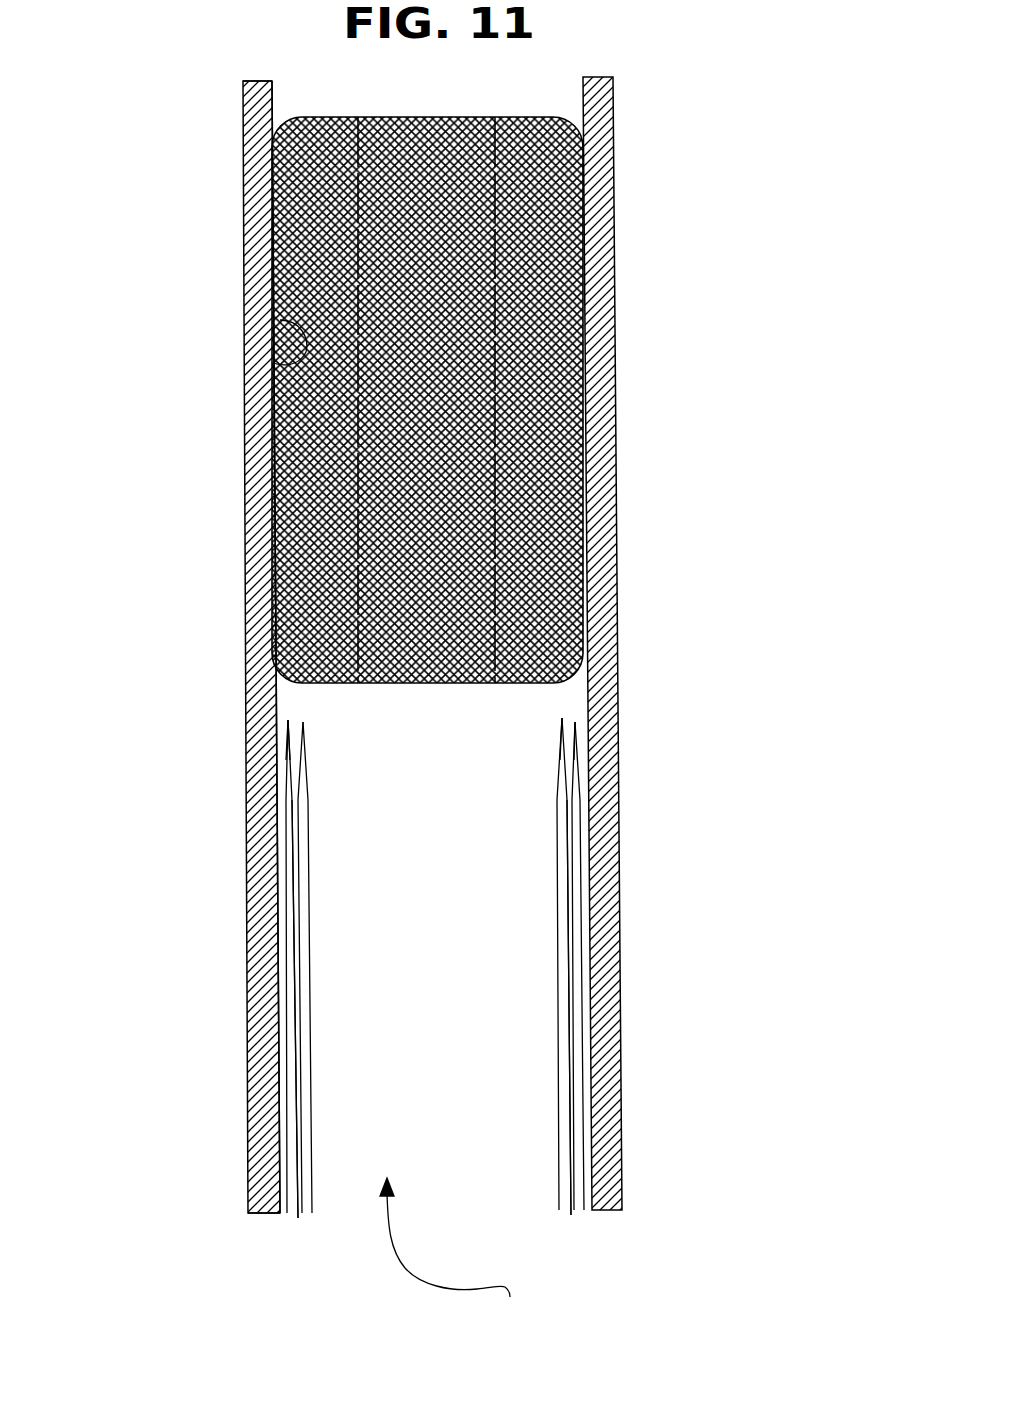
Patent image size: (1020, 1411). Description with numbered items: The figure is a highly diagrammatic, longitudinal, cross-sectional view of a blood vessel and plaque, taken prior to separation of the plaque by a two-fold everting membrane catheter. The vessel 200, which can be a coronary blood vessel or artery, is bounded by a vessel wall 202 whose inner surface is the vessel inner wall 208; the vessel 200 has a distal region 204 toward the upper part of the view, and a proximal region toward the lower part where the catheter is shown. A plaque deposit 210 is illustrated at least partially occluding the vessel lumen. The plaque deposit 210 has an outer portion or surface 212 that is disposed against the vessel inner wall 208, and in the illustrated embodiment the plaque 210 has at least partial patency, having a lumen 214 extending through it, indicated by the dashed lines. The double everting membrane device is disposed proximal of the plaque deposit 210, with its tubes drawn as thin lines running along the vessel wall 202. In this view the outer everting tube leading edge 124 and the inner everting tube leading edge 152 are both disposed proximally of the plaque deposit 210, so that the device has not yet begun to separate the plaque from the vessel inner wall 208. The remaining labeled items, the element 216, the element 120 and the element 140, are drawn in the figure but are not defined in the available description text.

The vessel 200 is at (245, 556).
The vessel wall 202 is at (263, 461).
The distal region 204 is at (243, 143).
The vessel inner wall 208 is at (272, 95).
The plaque deposit 210 is at (305, 253).
The outer portion or surface 212 is at (273, 363).
The lumen 214 is at (430, 356).
The distal end of housing 216 is at (248, 1115).
The catheter 120 is at (283, 797).
The outer everting tube leading edge 124 is at (288, 727).
The guidewire 140 is at (310, 855).
The inner everting tube leading edge 152 is at (305, 727).